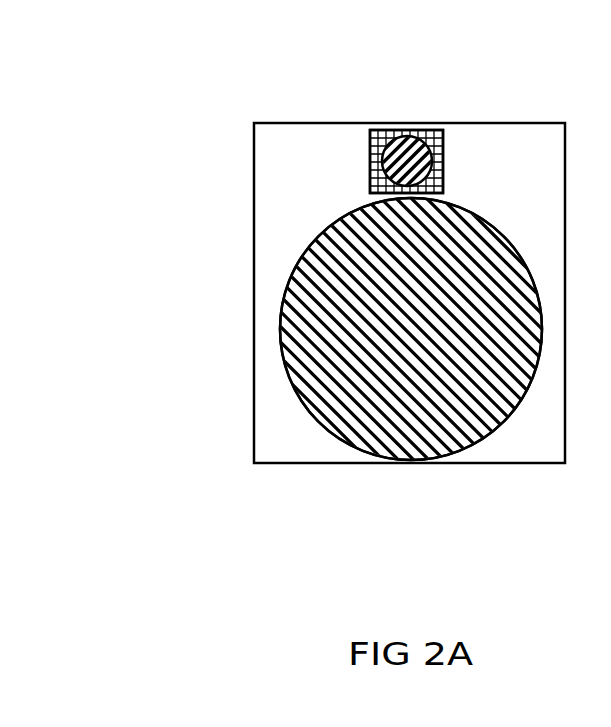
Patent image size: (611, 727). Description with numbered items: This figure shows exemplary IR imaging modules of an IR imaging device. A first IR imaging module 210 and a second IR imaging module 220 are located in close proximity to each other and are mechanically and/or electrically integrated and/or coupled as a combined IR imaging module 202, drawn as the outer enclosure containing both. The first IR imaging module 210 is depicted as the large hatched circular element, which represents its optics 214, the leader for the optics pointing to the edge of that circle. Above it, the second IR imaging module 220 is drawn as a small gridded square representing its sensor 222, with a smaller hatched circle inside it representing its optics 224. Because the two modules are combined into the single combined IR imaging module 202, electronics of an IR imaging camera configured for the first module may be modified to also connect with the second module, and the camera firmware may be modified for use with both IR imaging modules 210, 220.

The combined IR imaging module 202 is at (282, 80).
The IR imaging module 210 is at (234, 203).
The optics 214 is at (327, 432).
The IR imaging module 220 is at (353, 132).
The sensor 222 is at (428, 130).
The optics 224 is at (397, 131).